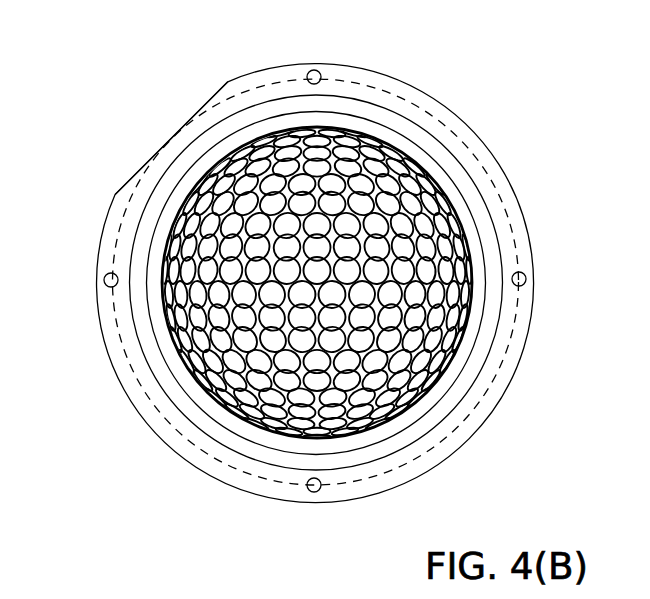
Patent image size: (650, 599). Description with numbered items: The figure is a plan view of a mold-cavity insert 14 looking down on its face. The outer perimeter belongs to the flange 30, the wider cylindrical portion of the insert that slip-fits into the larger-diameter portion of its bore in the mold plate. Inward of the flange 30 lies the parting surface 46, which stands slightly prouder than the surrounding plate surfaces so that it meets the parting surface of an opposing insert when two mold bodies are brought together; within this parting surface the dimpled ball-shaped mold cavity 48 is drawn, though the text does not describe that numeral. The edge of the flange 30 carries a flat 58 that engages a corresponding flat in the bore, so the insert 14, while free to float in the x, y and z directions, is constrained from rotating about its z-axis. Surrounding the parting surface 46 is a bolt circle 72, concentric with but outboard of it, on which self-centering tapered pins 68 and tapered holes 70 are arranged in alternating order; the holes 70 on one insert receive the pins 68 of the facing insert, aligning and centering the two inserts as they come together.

The mold-cavity insert 14 is at (538, 61).
The flange 30 is at (486, 421).
The parting surface 46 is at (465, 212).
The dimpled golf ball 48 is at (378, 148).
The flat 58 is at (210, 98).
The tapered pins 68 is at (108, 277).
The tapered holes 70 is at (315, 70).
The bolt circle 72 is at (517, 229).